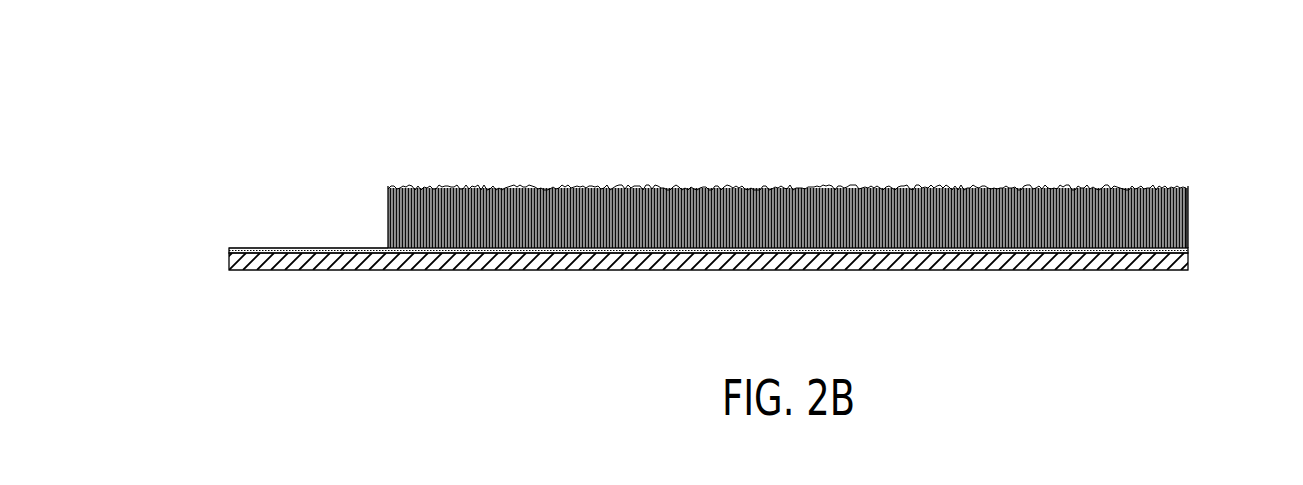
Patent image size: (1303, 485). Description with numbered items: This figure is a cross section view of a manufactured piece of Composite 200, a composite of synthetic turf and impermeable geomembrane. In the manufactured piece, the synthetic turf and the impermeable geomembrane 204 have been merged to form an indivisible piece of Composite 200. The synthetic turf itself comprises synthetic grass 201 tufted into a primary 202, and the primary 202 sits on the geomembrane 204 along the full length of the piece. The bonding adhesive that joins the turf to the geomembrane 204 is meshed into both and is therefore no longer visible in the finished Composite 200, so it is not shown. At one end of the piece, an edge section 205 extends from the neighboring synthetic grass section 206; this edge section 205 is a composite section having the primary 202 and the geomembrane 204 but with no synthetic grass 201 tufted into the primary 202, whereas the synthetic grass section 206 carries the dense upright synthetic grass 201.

The Composite 200 is at (1137, 115).
The synthetic grass 201 is at (1177, 193).
The primary 202 is at (1188, 253).
The impermeable geomembrane 204 is at (229, 263).
The edge section 205 is at (307, 227).
The synthetic grass section 206 is at (762, 170).